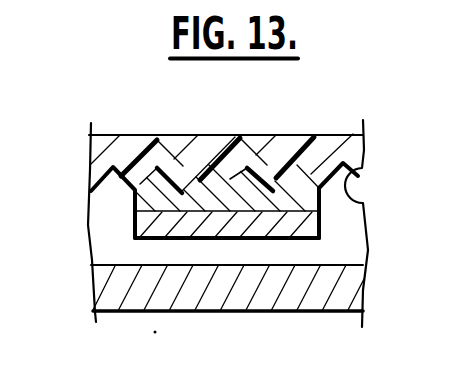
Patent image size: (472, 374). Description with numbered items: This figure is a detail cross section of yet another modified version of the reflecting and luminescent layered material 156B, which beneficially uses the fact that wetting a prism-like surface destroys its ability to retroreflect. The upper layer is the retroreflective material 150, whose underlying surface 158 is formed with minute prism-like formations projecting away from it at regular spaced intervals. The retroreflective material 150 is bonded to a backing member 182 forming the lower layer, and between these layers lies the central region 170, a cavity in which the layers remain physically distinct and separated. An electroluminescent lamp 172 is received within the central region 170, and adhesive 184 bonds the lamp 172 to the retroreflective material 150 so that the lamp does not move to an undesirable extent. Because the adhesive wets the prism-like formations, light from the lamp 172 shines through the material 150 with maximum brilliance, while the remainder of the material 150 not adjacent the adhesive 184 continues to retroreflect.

The reflecting and luminescent layered material 156B is at (340, 120).
The retroreflective material 150 is at (157, 140).
The underlying surface 158 is at (366, 203).
The adhesive 184 is at (133, 199).
The electroluminescent lamp 172 is at (133, 224).
The central region 170 is at (326, 249).
The backing member 182 is at (128, 297).